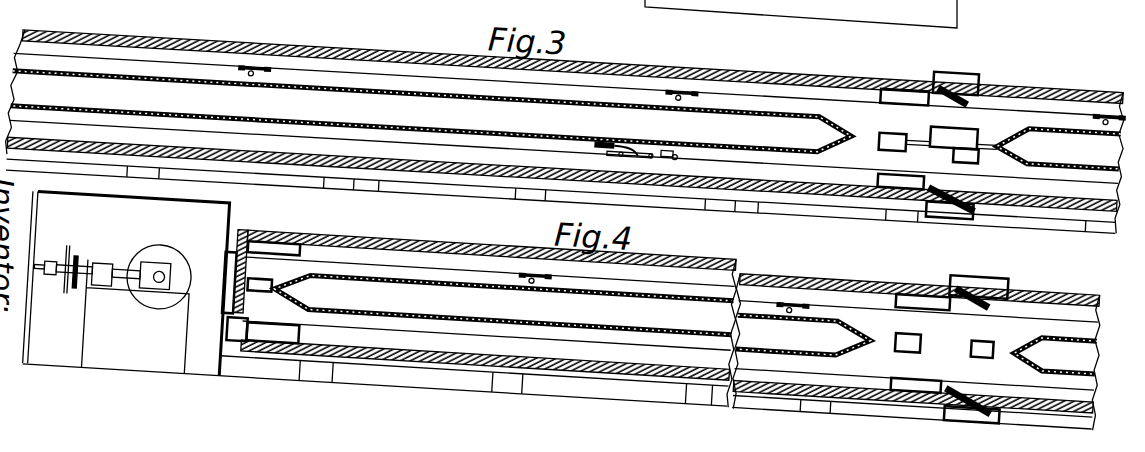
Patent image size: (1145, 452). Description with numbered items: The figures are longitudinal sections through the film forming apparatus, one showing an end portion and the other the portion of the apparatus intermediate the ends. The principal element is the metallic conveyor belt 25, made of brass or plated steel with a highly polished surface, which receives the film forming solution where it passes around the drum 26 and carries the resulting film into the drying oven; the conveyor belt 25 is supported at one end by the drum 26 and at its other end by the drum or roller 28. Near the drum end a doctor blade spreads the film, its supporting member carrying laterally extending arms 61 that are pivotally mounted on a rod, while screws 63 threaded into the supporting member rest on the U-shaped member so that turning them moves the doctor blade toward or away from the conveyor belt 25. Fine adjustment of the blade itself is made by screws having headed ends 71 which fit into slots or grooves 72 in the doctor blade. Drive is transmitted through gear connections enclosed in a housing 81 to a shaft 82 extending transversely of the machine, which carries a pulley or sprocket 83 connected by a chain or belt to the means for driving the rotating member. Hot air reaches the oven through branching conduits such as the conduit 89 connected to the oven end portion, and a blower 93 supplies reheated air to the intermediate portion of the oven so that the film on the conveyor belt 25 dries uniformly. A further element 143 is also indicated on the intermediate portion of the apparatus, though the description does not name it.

In FIG. 3, the conveyor belt 25 is at (318, 0).
In FIG. 4, the conveyor belt 25 is at (674, 254).
In FIG. 3, the drum 26 is at (372, 24).
In FIG. 4, the drum 26 is at (672, 281).
In FIG. 4, the drum or roller 28 is at (160, 260).
In FIG. 4, the laterally extending arms 61 is at (181, 269).
In FIG. 4, the adjusting screws 63 is at (125, 253).
In FIG. 4, the headed ends 71 is at (89, 254).
In FIG. 4, the slots or grooves 72 is at (61, 256).
In FIG. 4, the housing 81 is at (127, 271).
In FIG. 4, the shaft 82 is at (263, 284).
In FIG. 3, the pulley or sprocket 83 is at (227, 30).
In FIG. 4, the pulley or sprocket 83 is at (653, 309).
In FIG. 3, the branching conduit 89 is at (676, 138).
In FIG. 3, the blower 93 is at (698, 170).
In FIG. 3, the slide member 143 is at (624, 138).